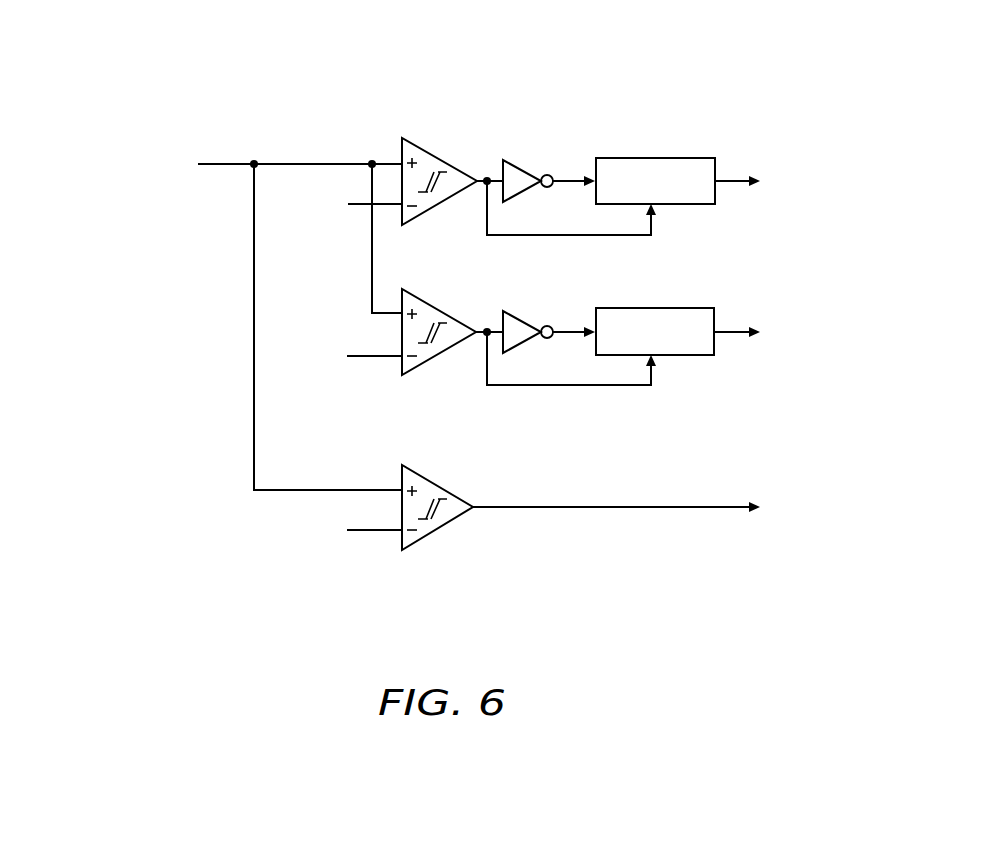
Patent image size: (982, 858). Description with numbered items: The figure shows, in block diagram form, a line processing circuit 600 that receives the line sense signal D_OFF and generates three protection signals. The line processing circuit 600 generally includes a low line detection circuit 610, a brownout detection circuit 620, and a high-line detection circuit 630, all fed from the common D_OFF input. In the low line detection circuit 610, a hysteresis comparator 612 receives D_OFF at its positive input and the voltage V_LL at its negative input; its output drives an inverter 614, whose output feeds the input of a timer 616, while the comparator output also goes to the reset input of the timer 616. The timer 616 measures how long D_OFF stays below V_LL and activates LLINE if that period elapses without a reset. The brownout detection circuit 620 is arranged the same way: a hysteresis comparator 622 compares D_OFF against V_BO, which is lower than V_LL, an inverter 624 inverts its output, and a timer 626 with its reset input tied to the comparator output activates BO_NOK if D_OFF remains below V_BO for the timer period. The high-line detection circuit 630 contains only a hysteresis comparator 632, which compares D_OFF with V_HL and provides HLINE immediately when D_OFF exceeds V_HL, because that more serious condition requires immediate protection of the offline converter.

The line processing circuit 600 is at (118, 54).
The low line detection circuit 610 is at (346, 126).
The hysteresis comparator 612 is at (440, 160).
The inverter 614 is at (525, 160).
The timer 616 is at (645, 157).
The brownout detection circuit 620 is at (352, 307).
The hysteresis comparator 622 is at (441, 311).
The inverter 624 is at (525, 311).
The timer 626 is at (645, 307).
The high-line detection circuit 630 is at (346, 464).
The hysteresis comparator 632 is at (434, 481).